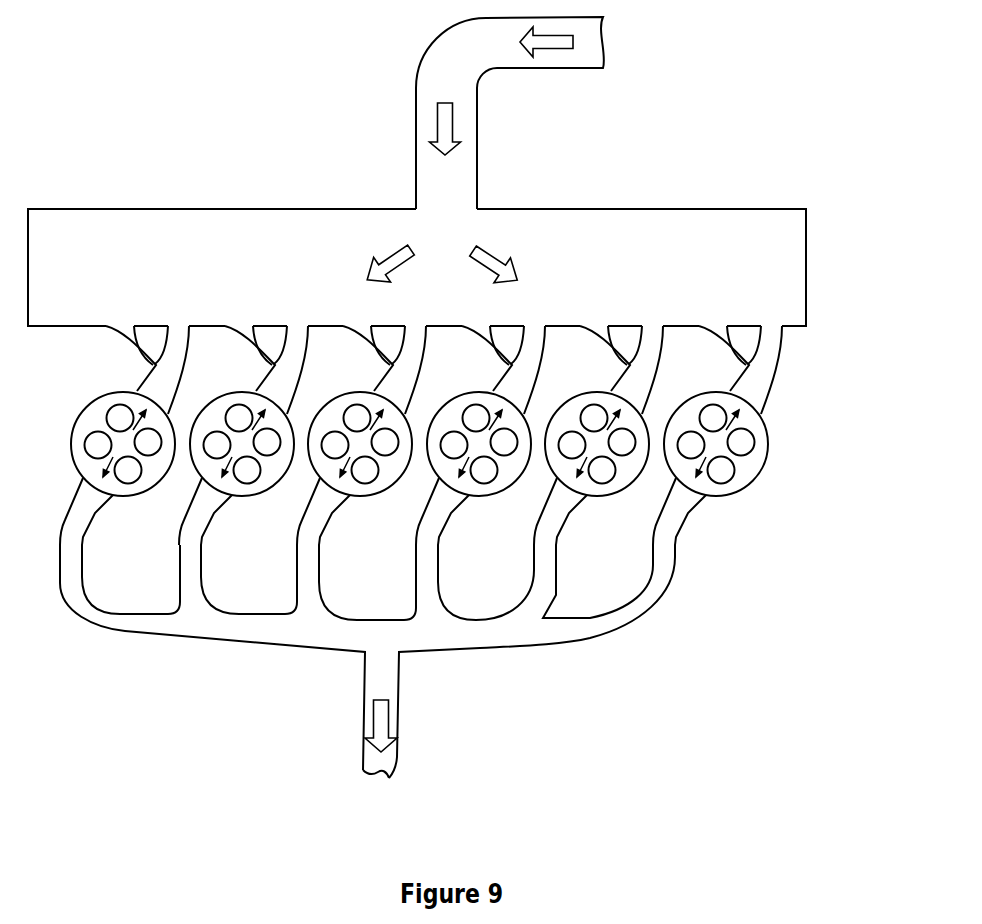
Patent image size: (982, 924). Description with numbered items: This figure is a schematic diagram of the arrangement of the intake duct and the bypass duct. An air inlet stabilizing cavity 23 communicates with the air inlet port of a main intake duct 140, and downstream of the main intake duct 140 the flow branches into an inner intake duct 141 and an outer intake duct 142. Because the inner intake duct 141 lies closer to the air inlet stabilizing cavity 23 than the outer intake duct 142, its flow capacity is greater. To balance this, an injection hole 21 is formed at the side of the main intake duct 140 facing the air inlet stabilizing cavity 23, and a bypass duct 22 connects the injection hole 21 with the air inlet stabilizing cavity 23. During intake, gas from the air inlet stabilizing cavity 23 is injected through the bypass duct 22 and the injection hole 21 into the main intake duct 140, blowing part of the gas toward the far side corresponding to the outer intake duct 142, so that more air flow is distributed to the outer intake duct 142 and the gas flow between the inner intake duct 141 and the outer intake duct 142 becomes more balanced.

The air inlet stabilizing cavity 23 is at (695, 232).
The bypass duct 22 is at (731, 345).
The injection hole 21 is at (752, 367).
The main intake duct 140 is at (765, 375).
The inner intake duct 141 is at (728, 403).
The outer intake duct 142 is at (748, 420).